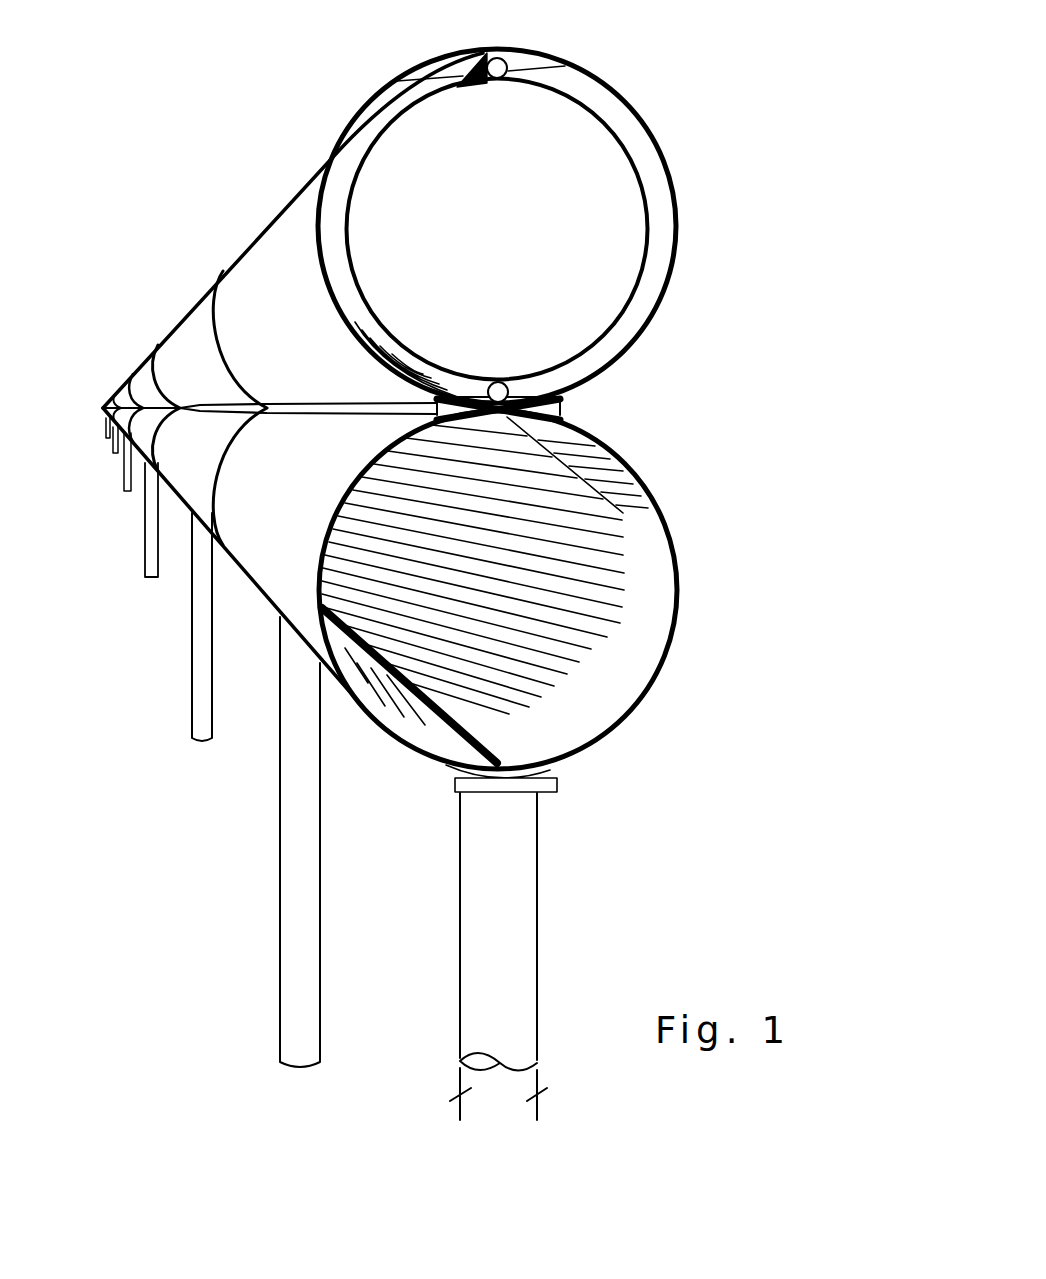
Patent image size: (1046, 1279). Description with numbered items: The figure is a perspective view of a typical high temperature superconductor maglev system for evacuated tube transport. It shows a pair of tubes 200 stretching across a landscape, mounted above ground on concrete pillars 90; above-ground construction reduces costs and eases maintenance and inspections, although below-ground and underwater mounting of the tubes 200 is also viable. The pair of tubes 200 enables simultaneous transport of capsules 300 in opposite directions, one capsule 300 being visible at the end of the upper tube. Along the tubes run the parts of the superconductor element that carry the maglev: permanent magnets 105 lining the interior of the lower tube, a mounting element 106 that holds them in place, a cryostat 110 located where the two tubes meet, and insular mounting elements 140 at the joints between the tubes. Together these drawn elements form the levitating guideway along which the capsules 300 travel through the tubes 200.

The concrete pillar 90 is at (298, 862).
The permanent magnet 105 is at (462, 723).
The mounting element 106 is at (485, 52).
The cryostat 110 is at (463, 75).
The insular mounting element 140 is at (510, 68).
The tube 200 is at (196, 300).
The capsule 300 is at (647, 265).